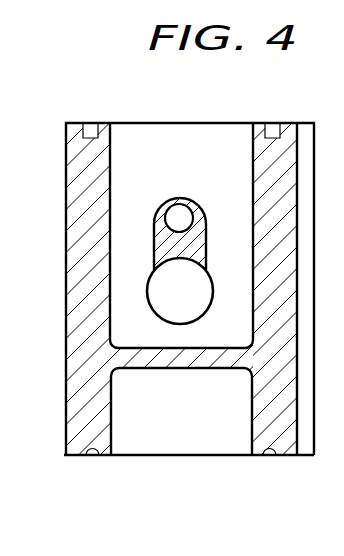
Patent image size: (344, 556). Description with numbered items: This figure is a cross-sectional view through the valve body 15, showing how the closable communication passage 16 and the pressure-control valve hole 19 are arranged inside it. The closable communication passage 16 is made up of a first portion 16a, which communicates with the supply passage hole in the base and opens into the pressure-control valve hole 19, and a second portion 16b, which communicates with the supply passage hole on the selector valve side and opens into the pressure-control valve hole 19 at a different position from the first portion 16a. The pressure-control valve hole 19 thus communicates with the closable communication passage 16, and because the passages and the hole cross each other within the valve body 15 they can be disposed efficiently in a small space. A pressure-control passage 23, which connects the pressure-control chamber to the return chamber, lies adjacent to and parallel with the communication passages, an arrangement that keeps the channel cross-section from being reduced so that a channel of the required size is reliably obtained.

The valve body 15 is at (81, 231).
The closable communication passage 16 is at (113, 407).
The first portion 16a is at (175, 445).
The second portion 16b is at (170, 132).
The pressure-control valve hole 19 is at (188, 324).
The pressure-control passage 23 is at (181, 214).